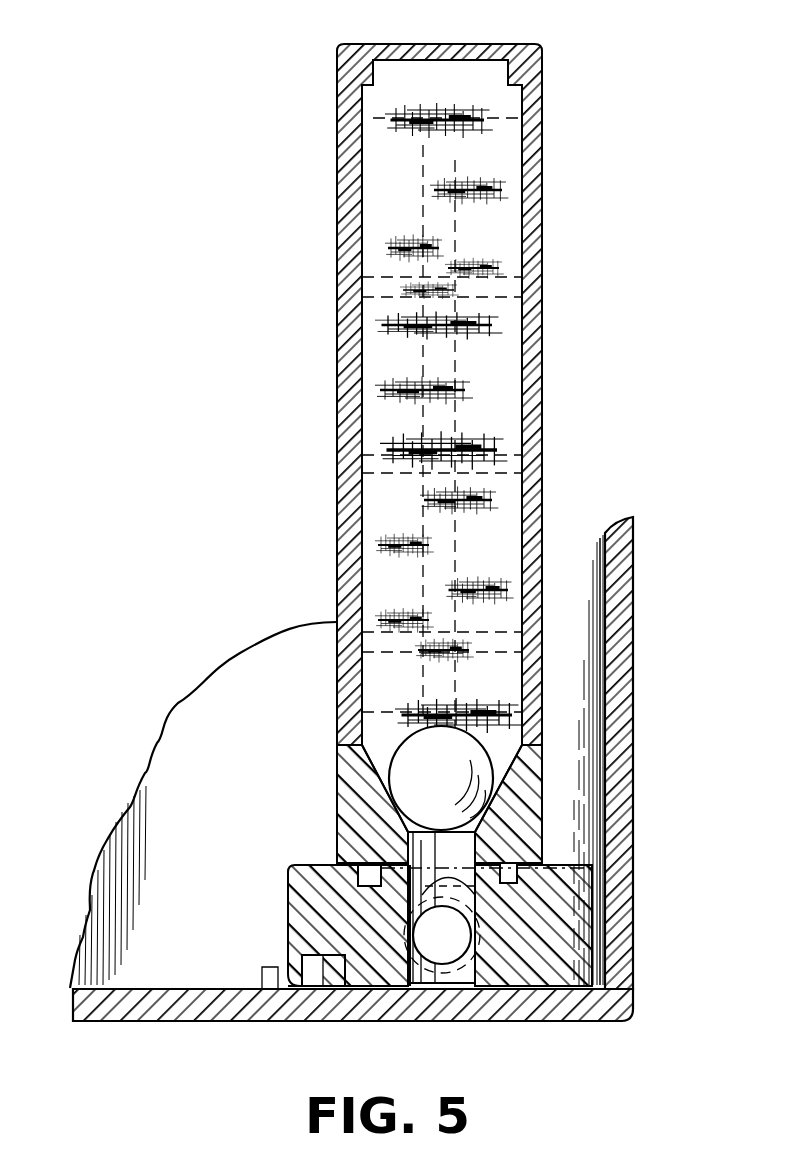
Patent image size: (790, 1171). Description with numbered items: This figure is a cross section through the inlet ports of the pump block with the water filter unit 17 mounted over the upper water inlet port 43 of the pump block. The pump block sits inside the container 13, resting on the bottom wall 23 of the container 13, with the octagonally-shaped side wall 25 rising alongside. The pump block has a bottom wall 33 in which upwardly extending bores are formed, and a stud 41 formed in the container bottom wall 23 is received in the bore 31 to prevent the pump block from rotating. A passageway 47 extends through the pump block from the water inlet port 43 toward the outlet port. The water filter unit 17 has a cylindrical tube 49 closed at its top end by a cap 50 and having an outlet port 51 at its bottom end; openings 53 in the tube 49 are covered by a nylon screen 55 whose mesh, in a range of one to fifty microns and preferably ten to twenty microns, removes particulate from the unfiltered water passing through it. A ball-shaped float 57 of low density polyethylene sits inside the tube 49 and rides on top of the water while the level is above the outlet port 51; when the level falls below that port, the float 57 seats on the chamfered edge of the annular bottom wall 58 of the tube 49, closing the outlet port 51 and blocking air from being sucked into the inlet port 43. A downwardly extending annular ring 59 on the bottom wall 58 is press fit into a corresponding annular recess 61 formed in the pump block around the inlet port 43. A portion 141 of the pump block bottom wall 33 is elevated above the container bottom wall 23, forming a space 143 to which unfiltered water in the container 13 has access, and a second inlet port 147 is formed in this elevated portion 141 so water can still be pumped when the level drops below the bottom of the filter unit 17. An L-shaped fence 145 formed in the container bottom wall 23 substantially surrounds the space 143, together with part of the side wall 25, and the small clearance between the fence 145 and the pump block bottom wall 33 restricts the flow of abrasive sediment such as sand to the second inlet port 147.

The container 13 is at (633, 702).
The water filter unit 17 is at (540, 267).
The bottom wall 23 is at (160, 1015).
The side wall 25 is at (622, 728).
The bore 31 is at (290, 945).
The bottom wall 33 is at (385, 992).
The stud 41 is at (323, 993).
The water inlet port 43 is at (500, 930).
The passageway 47 is at (455, 940).
The cylindrical tube 49 is at (345, 283).
The cap 50 is at (522, 44).
The outlet port 51 is at (412, 838).
The openings 53 is at (380, 172).
The screen 55 is at (378, 220).
The ball-shaped float 57 is at (392, 778).
The bottom wall 58 is at (345, 710).
The annular ring 59 is at (585, 878).
The annular recess 61 is at (517, 877).
The elevated portion 141 is at (511, 990).
The space 143 is at (382, 997).
The fence 145 is at (262, 978).
The second inlet port 147 is at (445, 992).